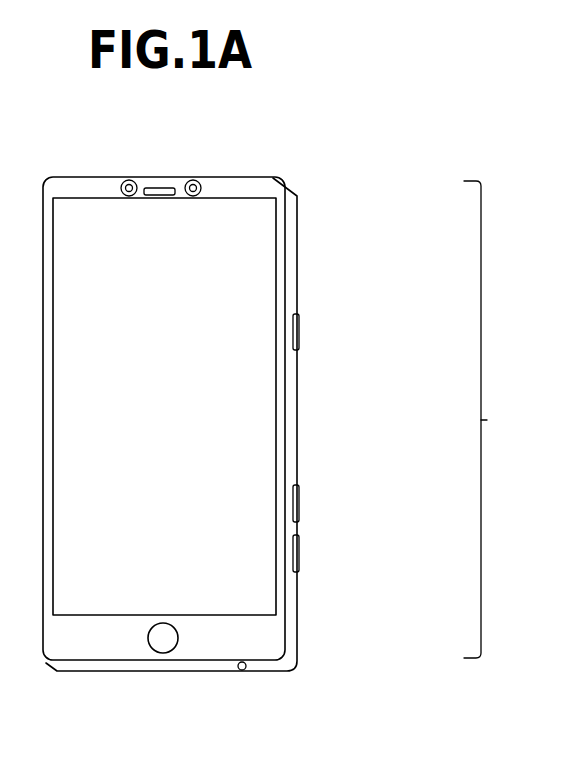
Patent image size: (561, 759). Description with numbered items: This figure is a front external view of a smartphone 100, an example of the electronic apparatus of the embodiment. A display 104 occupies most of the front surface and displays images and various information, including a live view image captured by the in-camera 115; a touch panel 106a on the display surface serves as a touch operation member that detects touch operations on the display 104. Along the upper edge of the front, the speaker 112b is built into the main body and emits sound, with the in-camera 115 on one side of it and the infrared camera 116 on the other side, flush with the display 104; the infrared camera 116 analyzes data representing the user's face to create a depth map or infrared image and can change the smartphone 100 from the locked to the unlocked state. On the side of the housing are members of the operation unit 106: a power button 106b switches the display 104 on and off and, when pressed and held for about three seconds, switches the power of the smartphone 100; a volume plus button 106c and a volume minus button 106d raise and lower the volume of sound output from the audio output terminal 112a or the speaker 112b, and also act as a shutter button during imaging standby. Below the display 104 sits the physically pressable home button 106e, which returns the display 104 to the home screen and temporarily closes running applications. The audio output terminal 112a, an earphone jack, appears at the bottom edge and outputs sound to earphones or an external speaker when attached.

The smartphone 100 is at (243, 177).
The display 104 is at (255, 406).
The touch panel 106a is at (257, 227).
The operation unit 106 is at (542, 434).
The power button 106b is at (300, 325).
The volume plus button 106c is at (300, 501).
The volume minus button 106d is at (300, 553).
The home button 106e is at (163, 638).
The audio output terminal 112a is at (243, 670).
The speaker 112b is at (156, 187).
The in-camera 115 is at (201, 187).
The infrared camera 116 is at (121, 188).